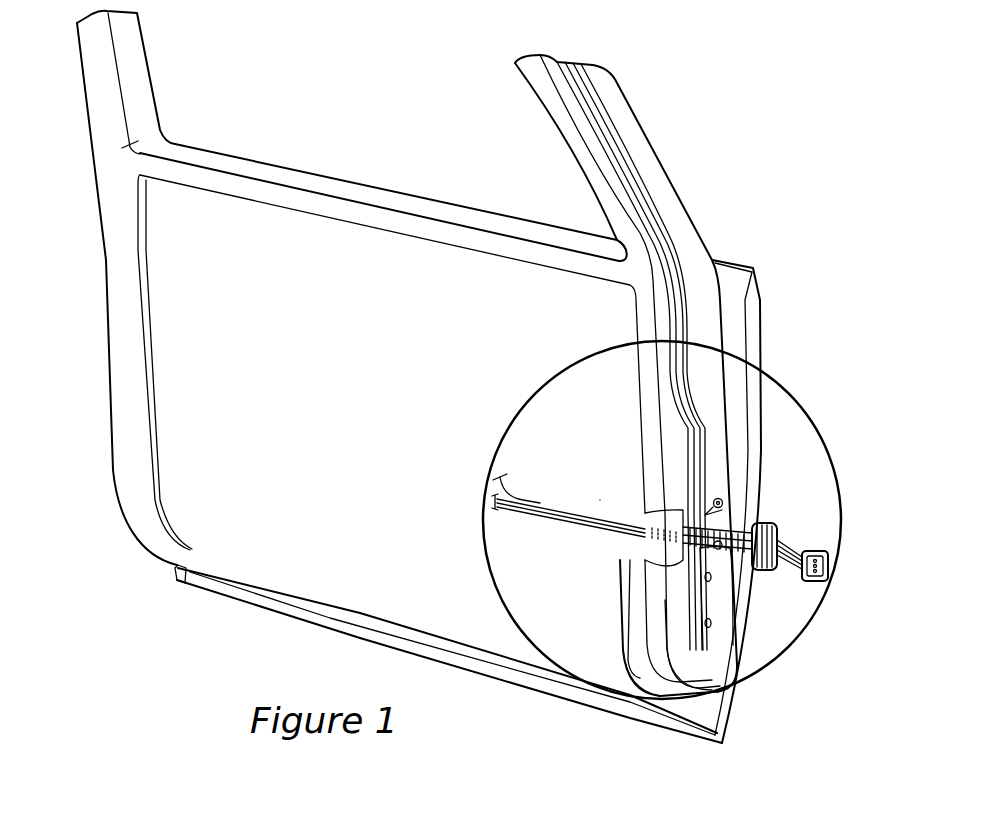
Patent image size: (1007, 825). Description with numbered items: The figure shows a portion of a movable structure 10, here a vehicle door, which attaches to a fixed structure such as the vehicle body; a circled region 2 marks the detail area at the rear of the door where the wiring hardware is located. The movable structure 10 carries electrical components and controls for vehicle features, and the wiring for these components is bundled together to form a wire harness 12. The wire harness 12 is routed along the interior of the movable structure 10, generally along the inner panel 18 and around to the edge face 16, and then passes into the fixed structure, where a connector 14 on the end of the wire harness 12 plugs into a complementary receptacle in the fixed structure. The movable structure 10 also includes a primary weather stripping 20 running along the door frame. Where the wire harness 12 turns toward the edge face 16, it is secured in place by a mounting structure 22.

The detail region 2 is at (777, 660).
The movable structure 10 is at (717, 183).
The wire harness 12 is at (567, 520).
The connector 14 is at (823, 552).
The edge face 16 is at (673, 643).
The inner panel 18 is at (583, 457).
The primary weather stripping 20 is at (693, 385).
The mounting structure 22 is at (707, 513).